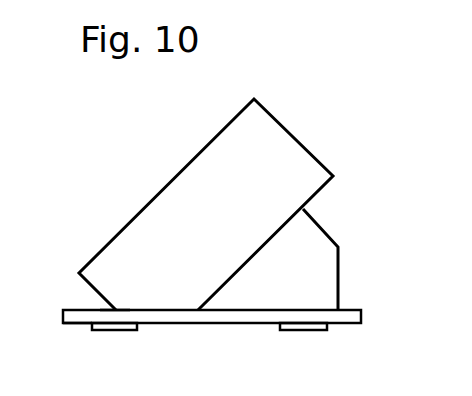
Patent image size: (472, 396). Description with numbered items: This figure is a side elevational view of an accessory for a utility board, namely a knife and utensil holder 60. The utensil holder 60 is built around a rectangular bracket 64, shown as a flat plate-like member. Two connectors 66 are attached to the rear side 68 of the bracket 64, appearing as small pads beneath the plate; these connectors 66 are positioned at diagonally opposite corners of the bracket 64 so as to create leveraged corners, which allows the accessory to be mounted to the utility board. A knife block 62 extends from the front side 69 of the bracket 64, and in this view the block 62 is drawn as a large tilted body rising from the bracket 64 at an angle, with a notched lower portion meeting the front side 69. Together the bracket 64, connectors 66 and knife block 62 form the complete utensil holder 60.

The knife and utensil holder 60 is at (86, 187).
The knife block 62 is at (224, 208).
The rectangular bracket 64 is at (362, 313).
The connectors 66 is at (127, 327).
The rear side 68 is at (75, 320).
The front side 69 is at (96, 307).